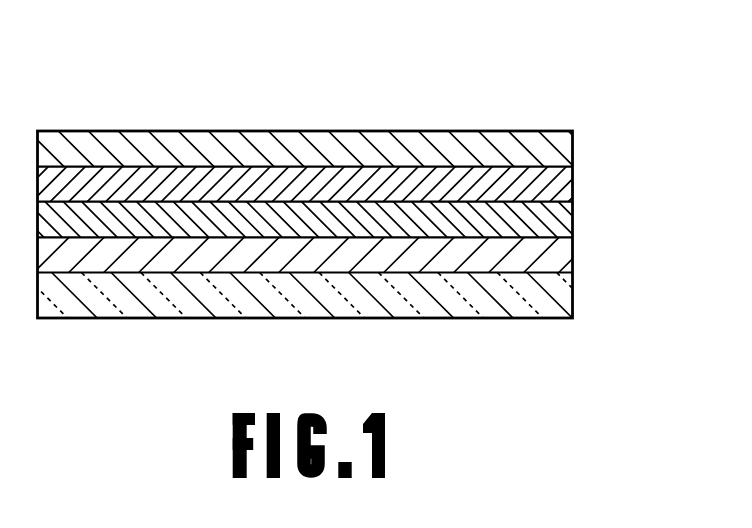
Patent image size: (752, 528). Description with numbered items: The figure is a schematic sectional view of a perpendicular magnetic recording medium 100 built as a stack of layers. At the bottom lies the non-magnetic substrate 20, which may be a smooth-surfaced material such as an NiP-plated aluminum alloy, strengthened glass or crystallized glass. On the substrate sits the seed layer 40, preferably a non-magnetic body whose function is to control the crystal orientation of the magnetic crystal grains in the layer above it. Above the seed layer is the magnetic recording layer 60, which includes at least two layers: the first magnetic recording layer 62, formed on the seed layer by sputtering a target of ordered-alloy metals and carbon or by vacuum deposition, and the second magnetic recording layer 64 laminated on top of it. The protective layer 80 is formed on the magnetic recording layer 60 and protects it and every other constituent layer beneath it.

The magnetic recording medium 100 is at (550, 91).
The protective layer 80 is at (573, 143).
The magnetic recording layer 60 is at (357, 195).
The second magnetic recording layer 64 is at (573, 179).
The first magnetic recording layer 62 is at (327, 212).
The seed layer 40 is at (573, 252).
The non-magnetic substrate 20 is at (573, 293).